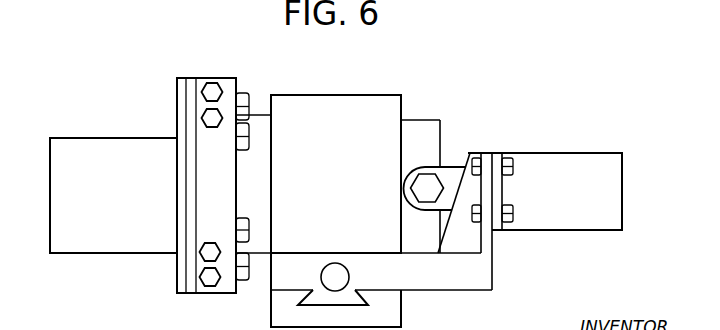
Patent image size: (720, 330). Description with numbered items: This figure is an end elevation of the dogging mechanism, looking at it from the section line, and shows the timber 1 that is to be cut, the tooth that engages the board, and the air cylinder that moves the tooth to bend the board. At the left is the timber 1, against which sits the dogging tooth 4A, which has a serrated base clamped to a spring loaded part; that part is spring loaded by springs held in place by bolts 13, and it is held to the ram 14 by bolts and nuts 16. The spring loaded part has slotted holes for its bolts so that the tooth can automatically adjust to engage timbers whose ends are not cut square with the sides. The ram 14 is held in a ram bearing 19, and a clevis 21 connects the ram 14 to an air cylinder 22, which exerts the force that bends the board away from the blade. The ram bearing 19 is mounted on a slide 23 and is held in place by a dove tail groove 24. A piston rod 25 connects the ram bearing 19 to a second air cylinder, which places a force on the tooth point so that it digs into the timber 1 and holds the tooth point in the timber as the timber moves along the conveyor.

The timber 1 is at (95, 137).
The dogging tooth 4A is at (172, 108).
The bolts 13 is at (223, 106).
The ram 14 is at (262, 110).
The nuts 16 is at (247, 86).
The ram bearing 19 is at (332, 93).
The clevis 21 is at (448, 165).
The air cylinder 22 is at (552, 148).
The slide 23 is at (410, 311).
The dove tail groove 24 is at (332, 312).
The piston rod 25 is at (355, 271).